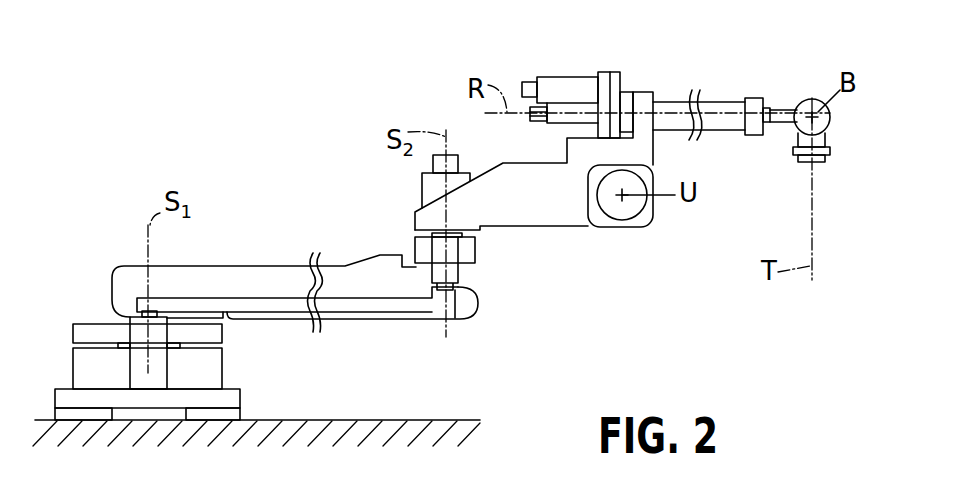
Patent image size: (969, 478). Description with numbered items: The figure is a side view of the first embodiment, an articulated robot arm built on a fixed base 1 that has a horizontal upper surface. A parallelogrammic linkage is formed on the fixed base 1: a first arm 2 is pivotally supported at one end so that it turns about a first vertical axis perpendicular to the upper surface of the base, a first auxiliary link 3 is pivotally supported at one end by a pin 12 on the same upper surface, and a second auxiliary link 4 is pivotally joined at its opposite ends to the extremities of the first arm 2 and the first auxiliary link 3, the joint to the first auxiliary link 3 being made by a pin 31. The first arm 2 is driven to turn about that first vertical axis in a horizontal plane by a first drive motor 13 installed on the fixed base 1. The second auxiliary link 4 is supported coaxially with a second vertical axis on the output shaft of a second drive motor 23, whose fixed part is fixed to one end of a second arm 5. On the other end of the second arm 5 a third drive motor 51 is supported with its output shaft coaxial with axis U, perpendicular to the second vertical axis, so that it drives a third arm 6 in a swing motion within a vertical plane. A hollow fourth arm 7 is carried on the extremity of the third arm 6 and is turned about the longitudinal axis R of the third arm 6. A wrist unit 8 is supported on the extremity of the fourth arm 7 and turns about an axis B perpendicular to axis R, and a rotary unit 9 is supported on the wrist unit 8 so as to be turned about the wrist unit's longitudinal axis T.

The fixed base 1 is at (234, 389).
The first arm 2 is at (240, 267).
The first auxiliary link 3 is at (353, 305).
The second auxiliary link 4 is at (472, 248).
The second arm 5 is at (563, 210).
The third arm 6 is at (662, 108).
The hollow fourth arm 7 is at (780, 113).
The wrist unit 8 is at (827, 118).
The rotary unit 9 is at (813, 162).
The pin 12 is at (130, 315).
The first drive motor 13 is at (90, 369).
The second drive motor 23 is at (433, 188).
The pin 31 is at (456, 292).
The third drive motor 51 is at (620, 212).